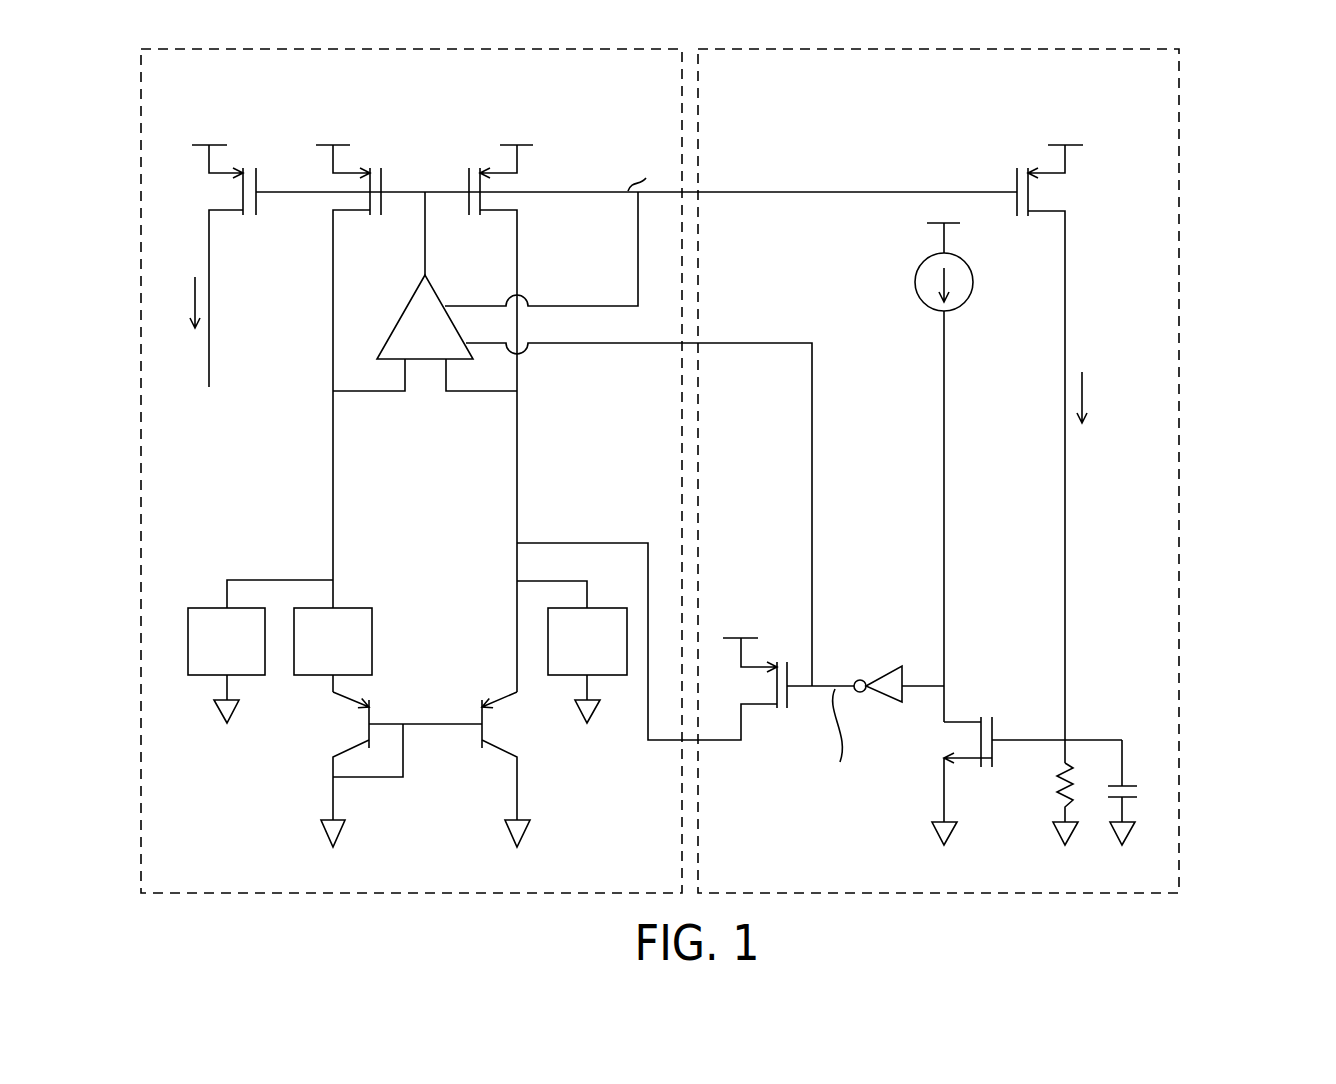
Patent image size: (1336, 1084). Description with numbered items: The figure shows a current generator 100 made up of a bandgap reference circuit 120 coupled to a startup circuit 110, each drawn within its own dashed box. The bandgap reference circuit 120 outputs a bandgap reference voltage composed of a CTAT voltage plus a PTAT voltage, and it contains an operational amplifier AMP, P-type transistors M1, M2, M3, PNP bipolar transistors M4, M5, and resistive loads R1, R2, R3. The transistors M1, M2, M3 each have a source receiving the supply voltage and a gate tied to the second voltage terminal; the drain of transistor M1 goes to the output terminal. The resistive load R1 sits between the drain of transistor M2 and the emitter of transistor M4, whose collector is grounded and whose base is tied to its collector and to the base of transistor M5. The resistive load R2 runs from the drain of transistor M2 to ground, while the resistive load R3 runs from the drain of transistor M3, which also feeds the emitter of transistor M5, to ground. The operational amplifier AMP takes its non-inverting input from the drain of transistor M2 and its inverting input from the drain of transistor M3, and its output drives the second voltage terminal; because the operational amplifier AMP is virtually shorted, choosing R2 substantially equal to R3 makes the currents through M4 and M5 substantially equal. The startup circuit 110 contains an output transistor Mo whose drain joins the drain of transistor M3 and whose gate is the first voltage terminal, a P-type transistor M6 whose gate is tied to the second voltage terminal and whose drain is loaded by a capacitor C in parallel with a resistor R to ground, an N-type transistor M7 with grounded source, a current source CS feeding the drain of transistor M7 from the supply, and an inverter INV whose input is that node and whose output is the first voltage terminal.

The current generator 100 is at (1228, 123).
The startup circuit 110 is at (1179, 357).
The bandgap reference circuit 120 is at (140, 465).
The transistor M1 is at (207, 267).
The transistor M2 is at (342, 362).
The transistor M3 is at (506, 404).
The transistor M4 is at (392, 772).
The transistor M5 is at (511, 769).
The transistor M6 is at (1067, 439).
The transistor M7 is at (1027, 781).
The output transistor Mo is at (784, 677).
The resistive load R1 is at (333, 650).
The resistive load R2 is at (226, 665).
The resistive load R3 is at (587, 665).
The resistor R is at (1071, 804).
The capacitor C is at (1120, 811).
The current source CS is at (949, 472).
The inverter INV is at (899, 702).
The operational amplifier AMP is at (572, 439).